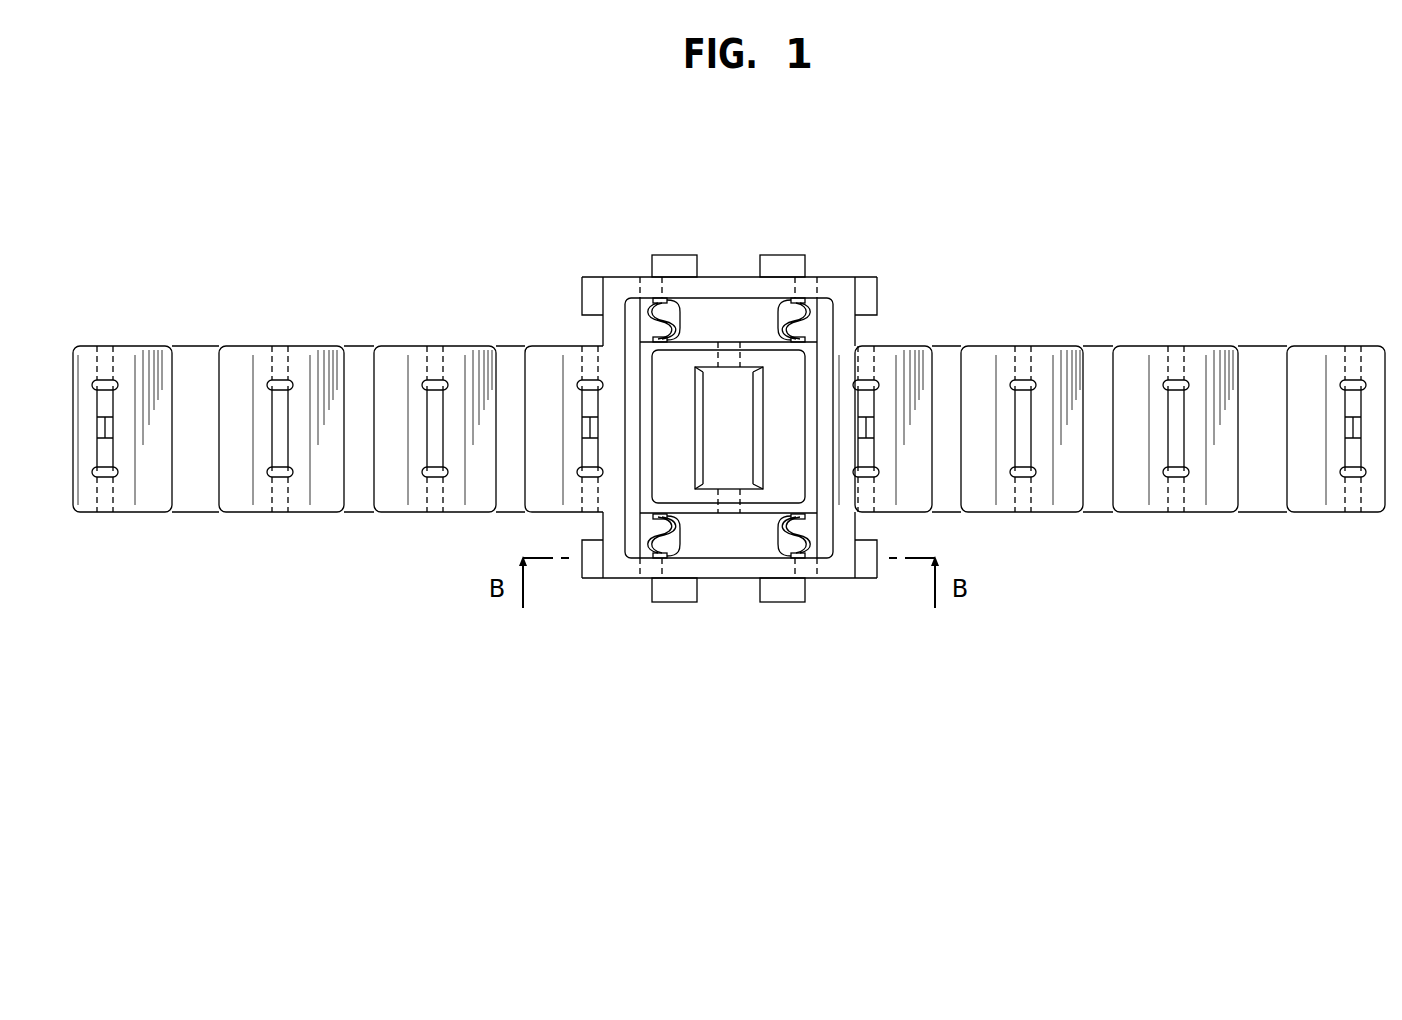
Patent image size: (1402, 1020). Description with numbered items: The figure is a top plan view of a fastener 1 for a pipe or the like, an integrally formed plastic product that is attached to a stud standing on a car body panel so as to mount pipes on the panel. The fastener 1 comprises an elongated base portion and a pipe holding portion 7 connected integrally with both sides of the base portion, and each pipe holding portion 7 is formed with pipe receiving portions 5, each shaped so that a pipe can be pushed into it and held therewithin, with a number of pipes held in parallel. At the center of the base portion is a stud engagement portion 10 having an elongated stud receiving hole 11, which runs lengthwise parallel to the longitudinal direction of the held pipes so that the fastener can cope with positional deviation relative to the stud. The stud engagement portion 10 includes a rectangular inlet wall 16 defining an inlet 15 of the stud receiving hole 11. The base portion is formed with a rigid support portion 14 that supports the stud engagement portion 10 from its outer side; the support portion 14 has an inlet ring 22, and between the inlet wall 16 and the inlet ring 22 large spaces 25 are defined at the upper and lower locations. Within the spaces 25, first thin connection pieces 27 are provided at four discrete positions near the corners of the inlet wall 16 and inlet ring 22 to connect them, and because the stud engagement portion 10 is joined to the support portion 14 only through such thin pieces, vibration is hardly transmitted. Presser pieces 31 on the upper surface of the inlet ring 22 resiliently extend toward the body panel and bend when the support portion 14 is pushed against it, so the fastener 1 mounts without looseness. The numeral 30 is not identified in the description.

The fastener 1 is at (893, 190).
The pipe receiving portion 5 is at (197, 378).
The pipe holding portion 7 is at (392, 335).
The stud engagement portion 10 is at (646, 516).
The stud receiving hole 11 is at (710, 397).
The support portion 14 is at (598, 537).
The inlet 15 is at (707, 420).
The inlet wall 16 is at (787, 453).
The inlet ring 22 is at (620, 292).
The space 25 is at (745, 313).
The first thin connection piece 27 is at (670, 318).
The guide line 30 is at (648, 292).
The presser piece 31 is at (590, 292).